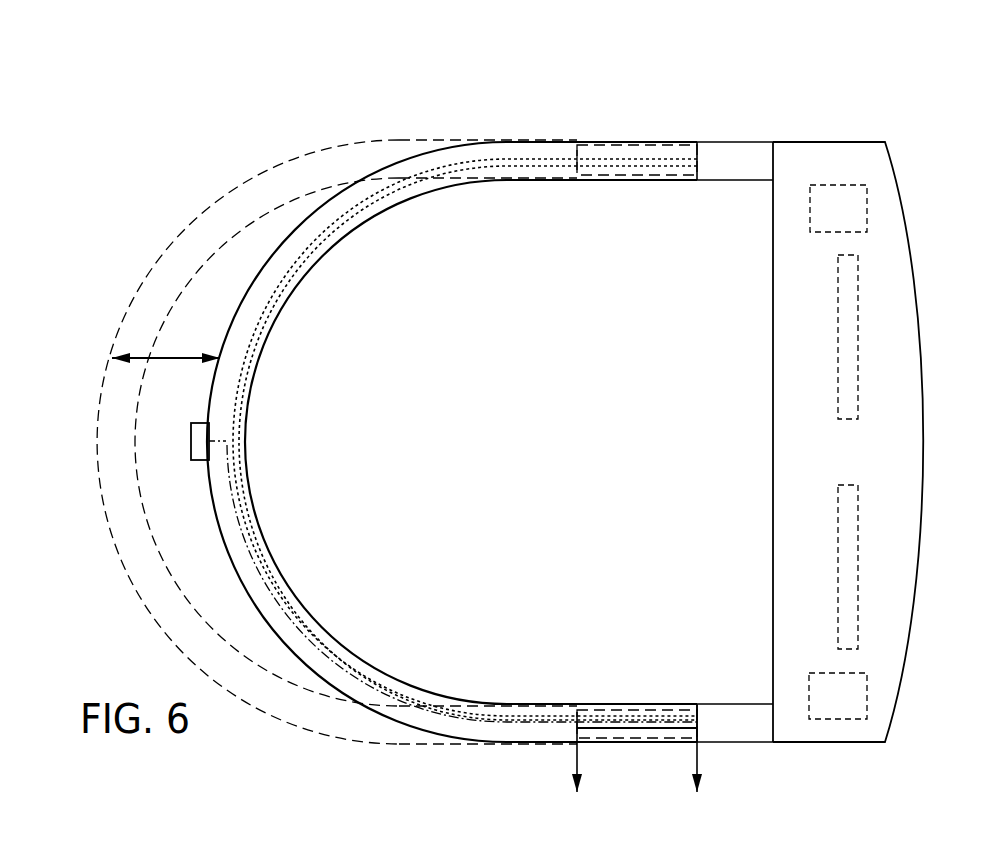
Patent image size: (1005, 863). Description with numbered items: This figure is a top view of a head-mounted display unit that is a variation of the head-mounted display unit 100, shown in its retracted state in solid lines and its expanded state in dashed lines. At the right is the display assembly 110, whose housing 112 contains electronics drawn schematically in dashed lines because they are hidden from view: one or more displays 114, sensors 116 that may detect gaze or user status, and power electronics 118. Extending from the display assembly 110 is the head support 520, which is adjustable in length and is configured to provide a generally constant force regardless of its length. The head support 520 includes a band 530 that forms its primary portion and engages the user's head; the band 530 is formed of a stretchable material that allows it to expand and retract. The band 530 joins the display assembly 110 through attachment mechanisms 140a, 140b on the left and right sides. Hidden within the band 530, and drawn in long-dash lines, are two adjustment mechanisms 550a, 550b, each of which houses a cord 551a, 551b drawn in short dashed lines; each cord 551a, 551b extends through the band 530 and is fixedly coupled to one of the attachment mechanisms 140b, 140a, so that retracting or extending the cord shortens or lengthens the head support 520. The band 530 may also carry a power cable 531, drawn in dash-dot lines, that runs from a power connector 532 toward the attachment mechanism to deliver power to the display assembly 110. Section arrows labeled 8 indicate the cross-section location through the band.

The head-mounted display unit 100 is at (220, 110).
The display assembly 110 is at (853, 105).
The housing 112 is at (773, 276).
The displays 114 is at (838, 320).
The sensors 116 is at (856, 221).
The power electronics 118 is at (856, 708).
The attachment mechanism 140a is at (738, 142).
The attachment mechanism 140b is at (765, 742).
The head support 520 is at (523, 110).
The band 530 is at (292, 297).
The power cable 531 is at (238, 507).
The power connector 532 is at (191, 441).
The adjustment mechanism 550a is at (599, 180).
The adjustment mechanism 550b is at (620, 705).
The cord 551a is at (253, 358).
The cord 551b is at (233, 413).
The section line 8- 8 is at (637, 764).